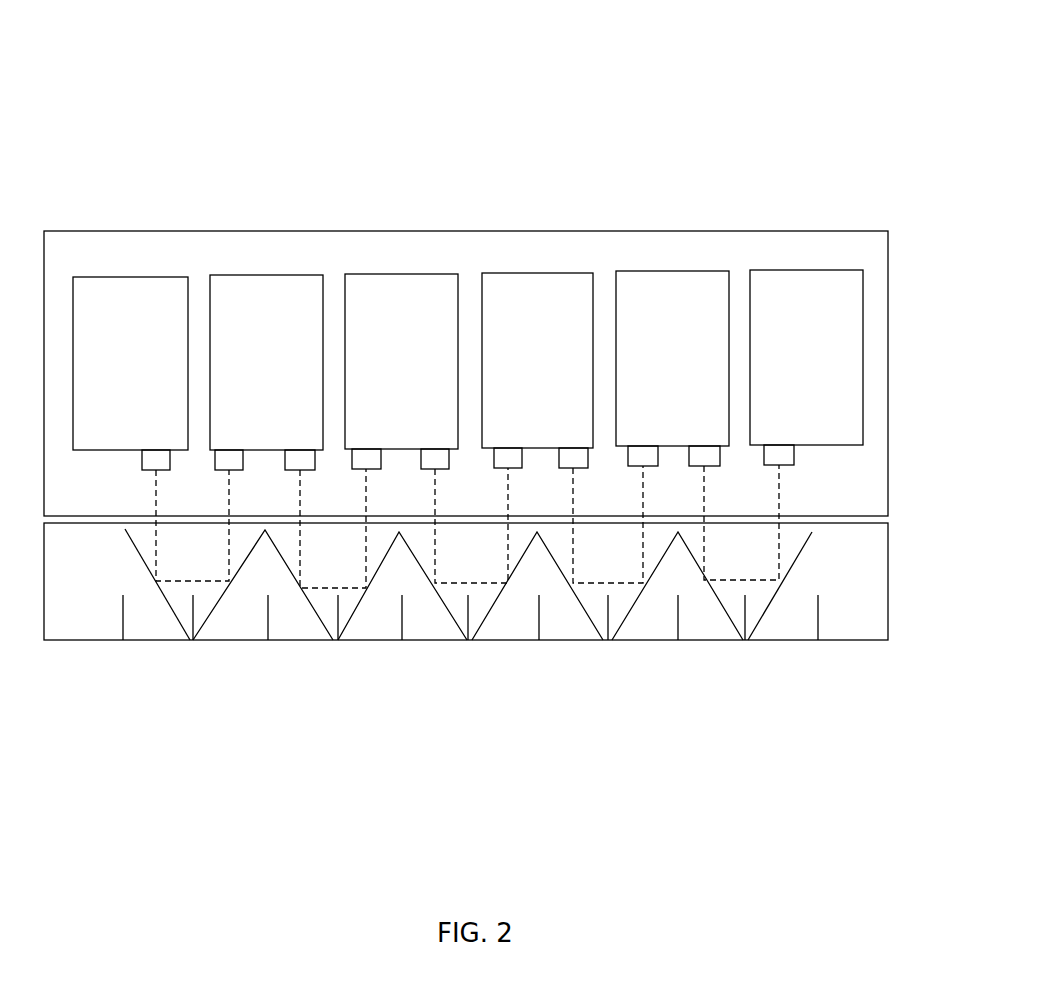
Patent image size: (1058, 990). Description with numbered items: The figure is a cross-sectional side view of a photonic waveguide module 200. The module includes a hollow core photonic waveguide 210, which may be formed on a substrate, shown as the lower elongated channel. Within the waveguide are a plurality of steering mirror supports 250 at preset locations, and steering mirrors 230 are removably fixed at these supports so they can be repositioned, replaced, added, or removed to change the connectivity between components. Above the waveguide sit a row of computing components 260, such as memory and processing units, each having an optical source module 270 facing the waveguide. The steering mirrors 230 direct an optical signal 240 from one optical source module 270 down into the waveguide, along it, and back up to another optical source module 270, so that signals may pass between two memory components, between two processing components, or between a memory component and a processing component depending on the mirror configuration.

The photonic waveguide module 200 is at (505, 136).
The hollow core photonic waveguide 210 is at (75, 627).
The steering mirrors 230 is at (163, 595).
The optical signal 240 is at (215, 600).
The steering mirror supports 250 is at (338, 613).
The computing components 260 is at (191, 258).
The optical source module 270 is at (147, 458).